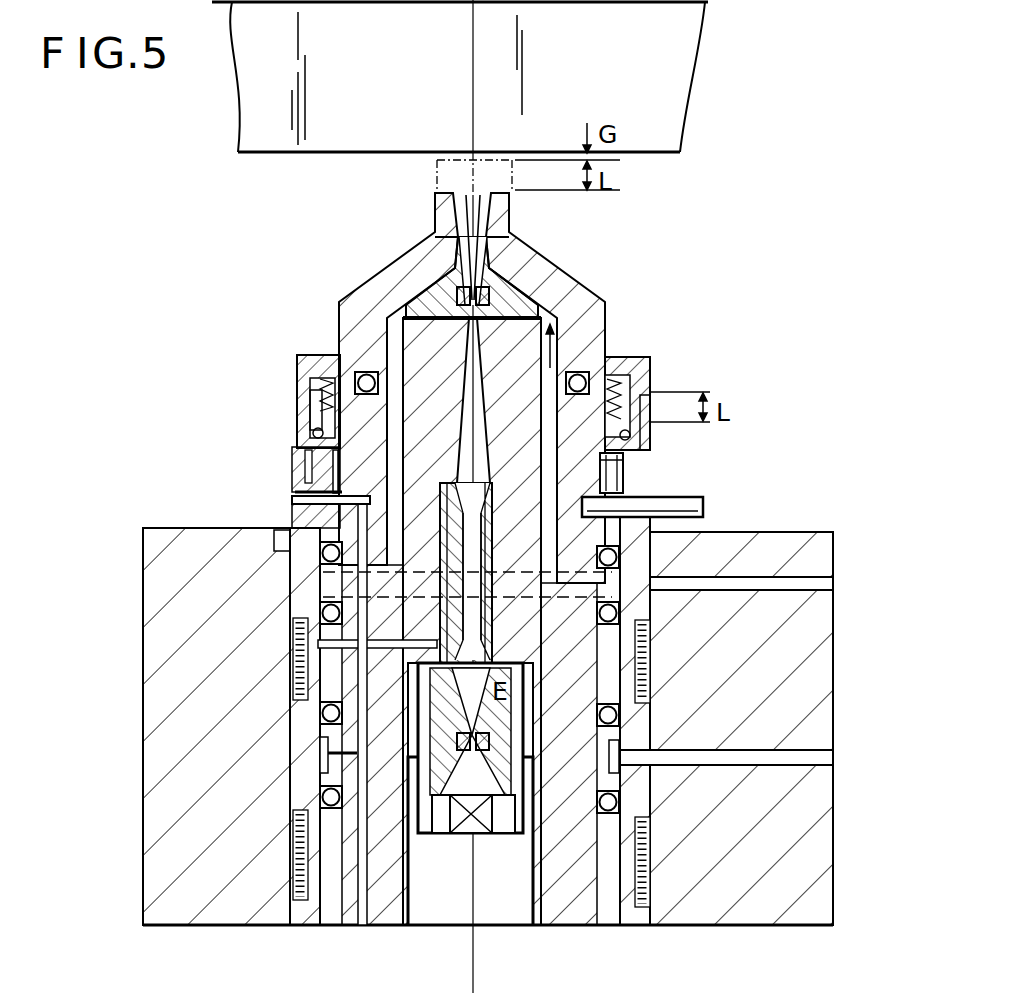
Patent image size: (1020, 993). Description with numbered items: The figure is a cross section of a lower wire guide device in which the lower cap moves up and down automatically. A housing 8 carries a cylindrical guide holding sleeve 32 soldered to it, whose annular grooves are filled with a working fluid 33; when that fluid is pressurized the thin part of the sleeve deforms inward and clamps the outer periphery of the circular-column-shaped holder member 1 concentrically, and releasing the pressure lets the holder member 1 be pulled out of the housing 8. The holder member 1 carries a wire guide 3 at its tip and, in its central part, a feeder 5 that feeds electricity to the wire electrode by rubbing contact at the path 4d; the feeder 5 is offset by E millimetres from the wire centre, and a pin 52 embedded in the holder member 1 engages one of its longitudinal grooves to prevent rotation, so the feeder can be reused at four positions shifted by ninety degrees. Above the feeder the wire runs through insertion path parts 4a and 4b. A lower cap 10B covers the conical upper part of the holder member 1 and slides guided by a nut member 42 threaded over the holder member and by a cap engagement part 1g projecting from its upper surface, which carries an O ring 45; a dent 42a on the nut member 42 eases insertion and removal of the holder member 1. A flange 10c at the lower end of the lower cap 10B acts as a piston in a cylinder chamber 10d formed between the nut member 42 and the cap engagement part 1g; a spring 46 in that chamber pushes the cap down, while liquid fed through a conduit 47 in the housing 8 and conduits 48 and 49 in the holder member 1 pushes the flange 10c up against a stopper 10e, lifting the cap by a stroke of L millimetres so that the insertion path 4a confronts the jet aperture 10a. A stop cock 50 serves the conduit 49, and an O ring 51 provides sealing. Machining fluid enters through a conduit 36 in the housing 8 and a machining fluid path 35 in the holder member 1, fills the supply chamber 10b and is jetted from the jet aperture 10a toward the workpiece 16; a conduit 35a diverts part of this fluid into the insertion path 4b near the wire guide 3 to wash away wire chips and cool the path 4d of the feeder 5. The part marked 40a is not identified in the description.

The workpiece 16 is at (700, 92).
The insertion path 4a is at (466, 195).
The jet aperture 10a is at (450, 218).
The wire guide 3 is at (515, 285).
The insertion path 4b is at (478, 375).
The supply chamber 10b is at (526, 282).
The lower cap 10B is at (590, 290).
The cap engagement part 1g is at (338, 352).
The conduit 35a is at (556, 300).
The nut member 42 is at (316, 328).
The O ring 45 is at (612, 358).
The dent 42a is at (300, 362).
The stopper 10e is at (630, 403).
The cylinder chamber 10d is at (310, 398).
The spring 46 is at (320, 408).
The flange 10c is at (300, 467).
The machining fluid path 35 is at (623, 484).
The plate 40a is at (690, 500).
The stop cock 50 is at (297, 502).
The feeder 5 is at (478, 542).
The conduit 36 is at (835, 584).
The path 4d is at (468, 607).
The working fluid 33 is at (292, 646).
The pin 52 is at (320, 708).
The O ring 51 is at (620, 718).
The conduit 47 is at (826, 762).
The conduit 49 is at (320, 762).
The conduit 48 is at (618, 768).
The holder member 1 is at (580, 916).
The guide holding sleeve 32 is at (636, 920).
The housing 8 is at (780, 928).